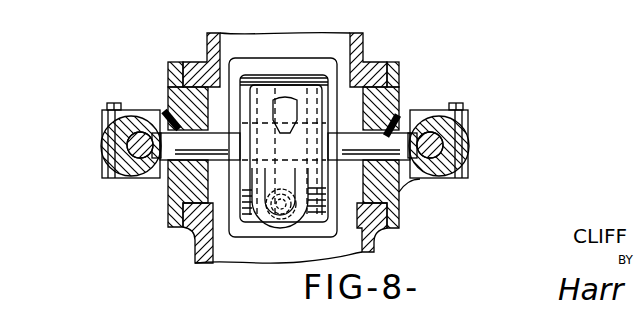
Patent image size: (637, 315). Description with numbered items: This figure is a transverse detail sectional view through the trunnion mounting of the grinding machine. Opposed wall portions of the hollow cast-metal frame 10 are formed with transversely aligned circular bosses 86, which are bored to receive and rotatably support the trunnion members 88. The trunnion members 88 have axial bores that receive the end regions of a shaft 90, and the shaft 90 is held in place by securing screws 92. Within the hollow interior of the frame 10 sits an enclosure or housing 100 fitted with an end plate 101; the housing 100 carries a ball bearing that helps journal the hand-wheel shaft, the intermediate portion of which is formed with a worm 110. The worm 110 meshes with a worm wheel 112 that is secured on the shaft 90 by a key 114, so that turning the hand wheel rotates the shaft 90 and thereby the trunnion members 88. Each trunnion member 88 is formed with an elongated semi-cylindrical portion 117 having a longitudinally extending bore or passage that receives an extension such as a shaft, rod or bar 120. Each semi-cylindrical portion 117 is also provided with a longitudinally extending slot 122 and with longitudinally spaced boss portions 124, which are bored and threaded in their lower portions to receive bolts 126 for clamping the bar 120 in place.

The frame 10 is at (191, 267).
The circular bosses 86 is at (190, 62).
The trunnion members 88 is at (170, 100).
The shaft 90 is at (172, 198).
The securing screws 92 is at (165, 112).
The housing 100 is at (262, 33).
The end plate 101 is at (207, 53).
The worm 110 is at (292, 210).
The worm wheel 112 is at (275, 87).
The key 114 is at (307, 85).
The semi-cylindrical portions 117 is at (122, 185).
The shaft, rod or bar 120 is at (117, 180).
The slot 122 is at (128, 145).
The boss portions 124 is at (104, 165).
The bolts 126 is at (108, 110).